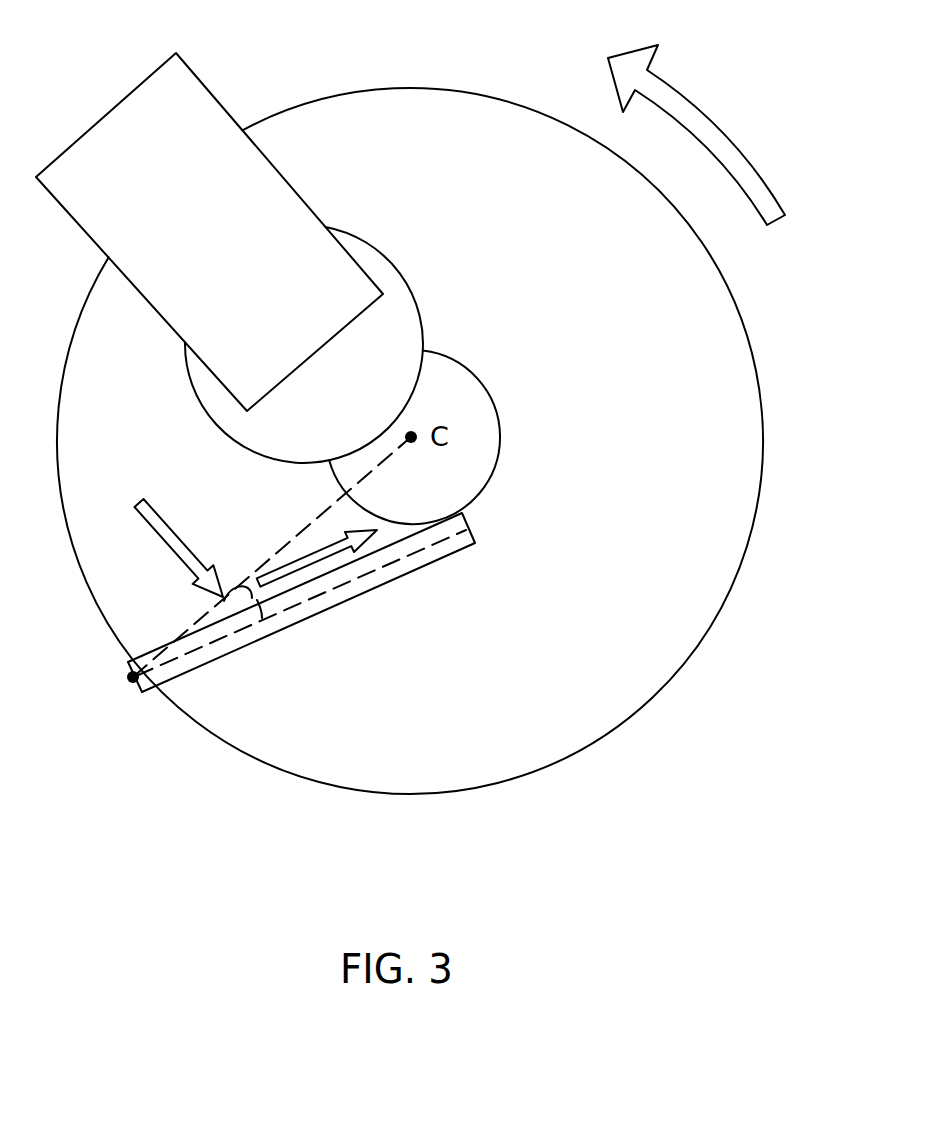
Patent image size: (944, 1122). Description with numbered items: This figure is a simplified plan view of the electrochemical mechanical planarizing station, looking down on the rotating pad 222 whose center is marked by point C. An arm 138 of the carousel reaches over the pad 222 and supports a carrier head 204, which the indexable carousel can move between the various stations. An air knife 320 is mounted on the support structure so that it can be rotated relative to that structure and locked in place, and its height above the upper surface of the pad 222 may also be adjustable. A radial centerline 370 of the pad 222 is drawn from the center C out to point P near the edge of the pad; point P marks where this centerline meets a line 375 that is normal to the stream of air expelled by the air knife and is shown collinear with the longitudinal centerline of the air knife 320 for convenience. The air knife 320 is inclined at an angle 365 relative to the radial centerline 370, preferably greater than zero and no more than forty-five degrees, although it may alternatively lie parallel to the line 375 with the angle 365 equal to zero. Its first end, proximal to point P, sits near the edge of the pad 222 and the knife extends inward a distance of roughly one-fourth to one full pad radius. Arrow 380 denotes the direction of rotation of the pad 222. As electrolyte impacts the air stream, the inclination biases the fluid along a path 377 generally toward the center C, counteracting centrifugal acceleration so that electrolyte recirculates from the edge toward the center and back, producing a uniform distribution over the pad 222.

The arm 138 is at (110, 110).
The carrier head 204 is at (400, 268).
The pad 222 is at (755, 380).
The air knife 320 is at (155, 692).
The angle 365 is at (225, 600).
The radial centerline 370 is at (300, 535).
The line 375 is at (415, 553).
The path 377 is at (162, 510).
The arrow 380 is at (718, 130).